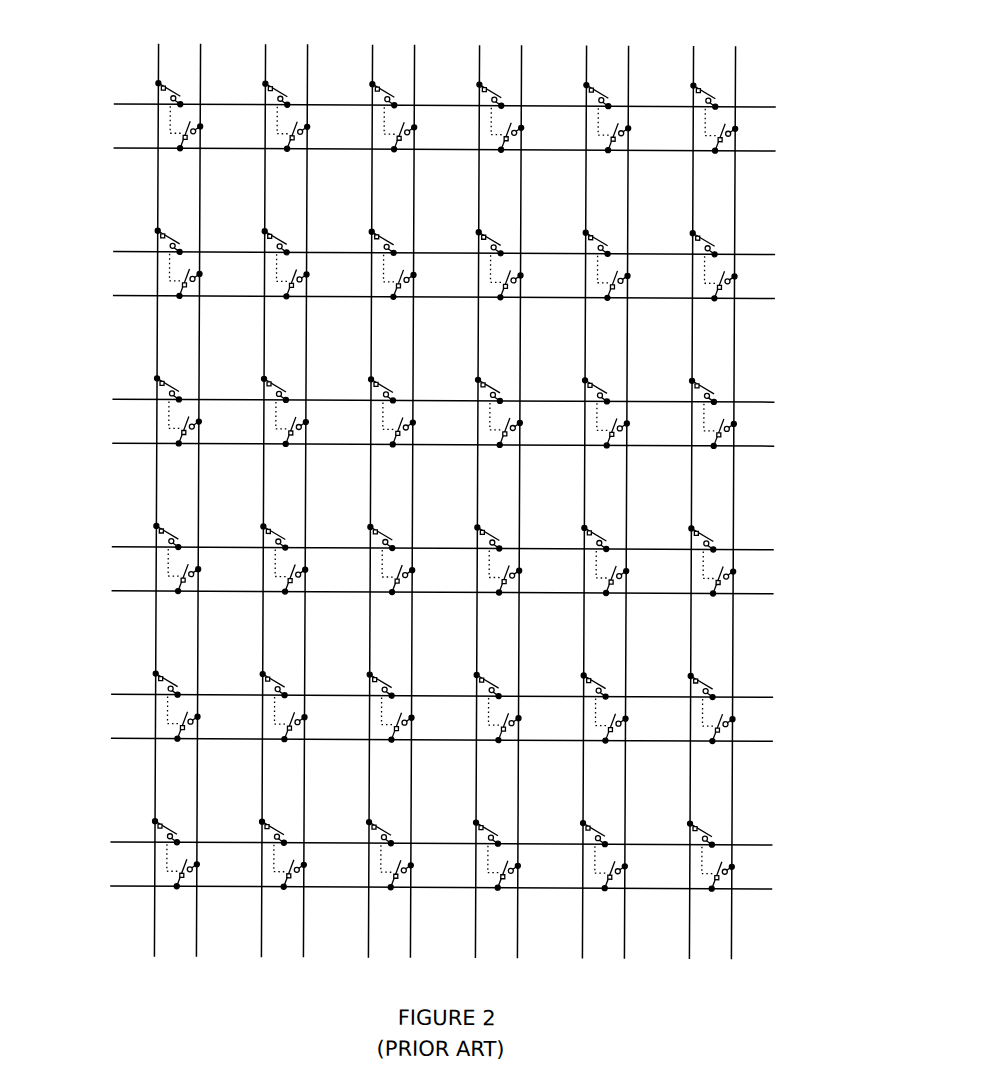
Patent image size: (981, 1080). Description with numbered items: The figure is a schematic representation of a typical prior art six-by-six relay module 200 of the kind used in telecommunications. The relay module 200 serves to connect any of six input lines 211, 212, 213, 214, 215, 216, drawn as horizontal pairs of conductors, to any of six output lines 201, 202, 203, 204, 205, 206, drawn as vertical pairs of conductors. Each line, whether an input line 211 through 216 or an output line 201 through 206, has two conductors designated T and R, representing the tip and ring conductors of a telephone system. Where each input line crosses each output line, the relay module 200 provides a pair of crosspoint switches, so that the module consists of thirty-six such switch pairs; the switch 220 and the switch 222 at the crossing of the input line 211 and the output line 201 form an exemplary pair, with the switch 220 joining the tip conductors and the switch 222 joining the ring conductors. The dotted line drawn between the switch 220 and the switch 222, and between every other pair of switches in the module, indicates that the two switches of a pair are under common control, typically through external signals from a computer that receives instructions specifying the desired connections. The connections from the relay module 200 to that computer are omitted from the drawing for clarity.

The relay module 200 is at (463, 502).
The output line 201 is at (179, 478).
The output line 202 is at (286, 478).
The output line 203 is at (393, 479).
The output line 204 is at (500, 479).
The output line 205 is at (607, 479).
The output line 206 is at (714, 479).
The input line 211 is at (407, 127).
The input line 212 is at (407, 274).
The input line 213 is at (406, 422).
The input line 214 is at (405, 569).
The input line 215 is at (405, 717).
The input line 216 is at (404, 865).
The crosspoint switch 220 is at (167, 90).
The crosspoint switch 222 is at (192, 141).